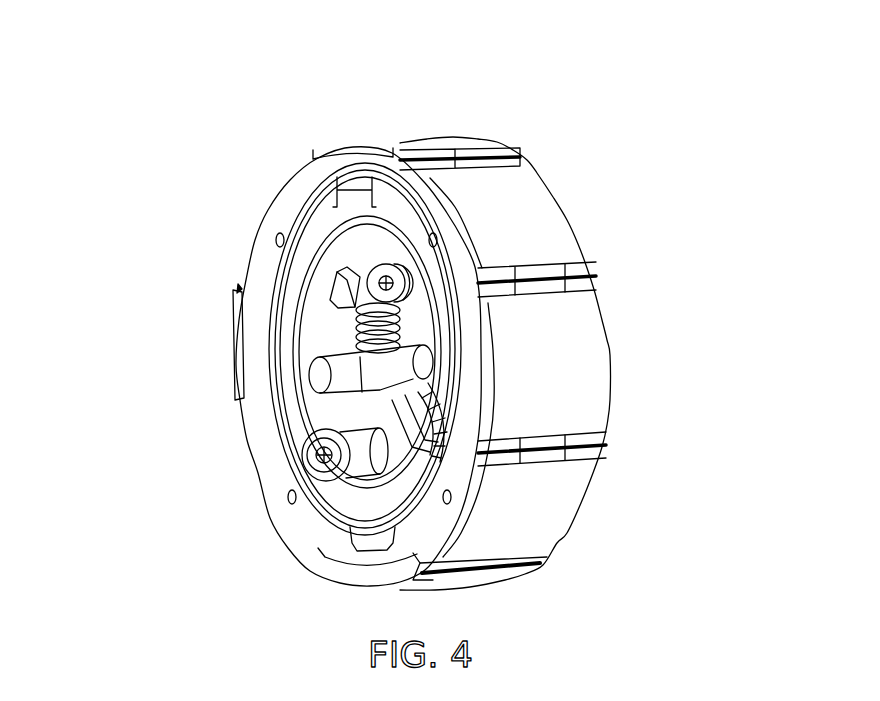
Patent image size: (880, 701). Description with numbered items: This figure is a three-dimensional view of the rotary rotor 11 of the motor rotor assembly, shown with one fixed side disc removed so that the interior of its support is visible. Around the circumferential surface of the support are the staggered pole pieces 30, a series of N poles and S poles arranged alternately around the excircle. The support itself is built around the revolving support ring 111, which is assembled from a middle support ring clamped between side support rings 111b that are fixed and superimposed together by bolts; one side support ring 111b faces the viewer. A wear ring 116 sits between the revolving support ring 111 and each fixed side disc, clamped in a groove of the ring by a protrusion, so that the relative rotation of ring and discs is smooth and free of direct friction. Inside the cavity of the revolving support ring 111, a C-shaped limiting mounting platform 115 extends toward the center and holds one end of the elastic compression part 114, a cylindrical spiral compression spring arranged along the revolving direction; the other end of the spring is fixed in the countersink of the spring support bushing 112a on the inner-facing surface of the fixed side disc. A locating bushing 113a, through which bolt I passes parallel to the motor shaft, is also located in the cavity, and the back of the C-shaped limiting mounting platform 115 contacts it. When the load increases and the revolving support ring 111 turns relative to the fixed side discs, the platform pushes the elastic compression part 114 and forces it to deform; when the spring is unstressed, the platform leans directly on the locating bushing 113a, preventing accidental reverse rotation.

The rotary rotor 11 is at (414, 345).
The staggered pole piece 30 is at (518, 223).
The revolving support ring 111 is at (284, 224).
The side support ring 111b is at (297, 213).
The wear ring 116 is at (353, 207).
The C-shaped limiting mounting platform 115 is at (337, 287).
The elastic compression part 114 is at (350, 331).
The spring support bushing 112a is at (352, 403).
The locating bushing 113a is at (370, 479).